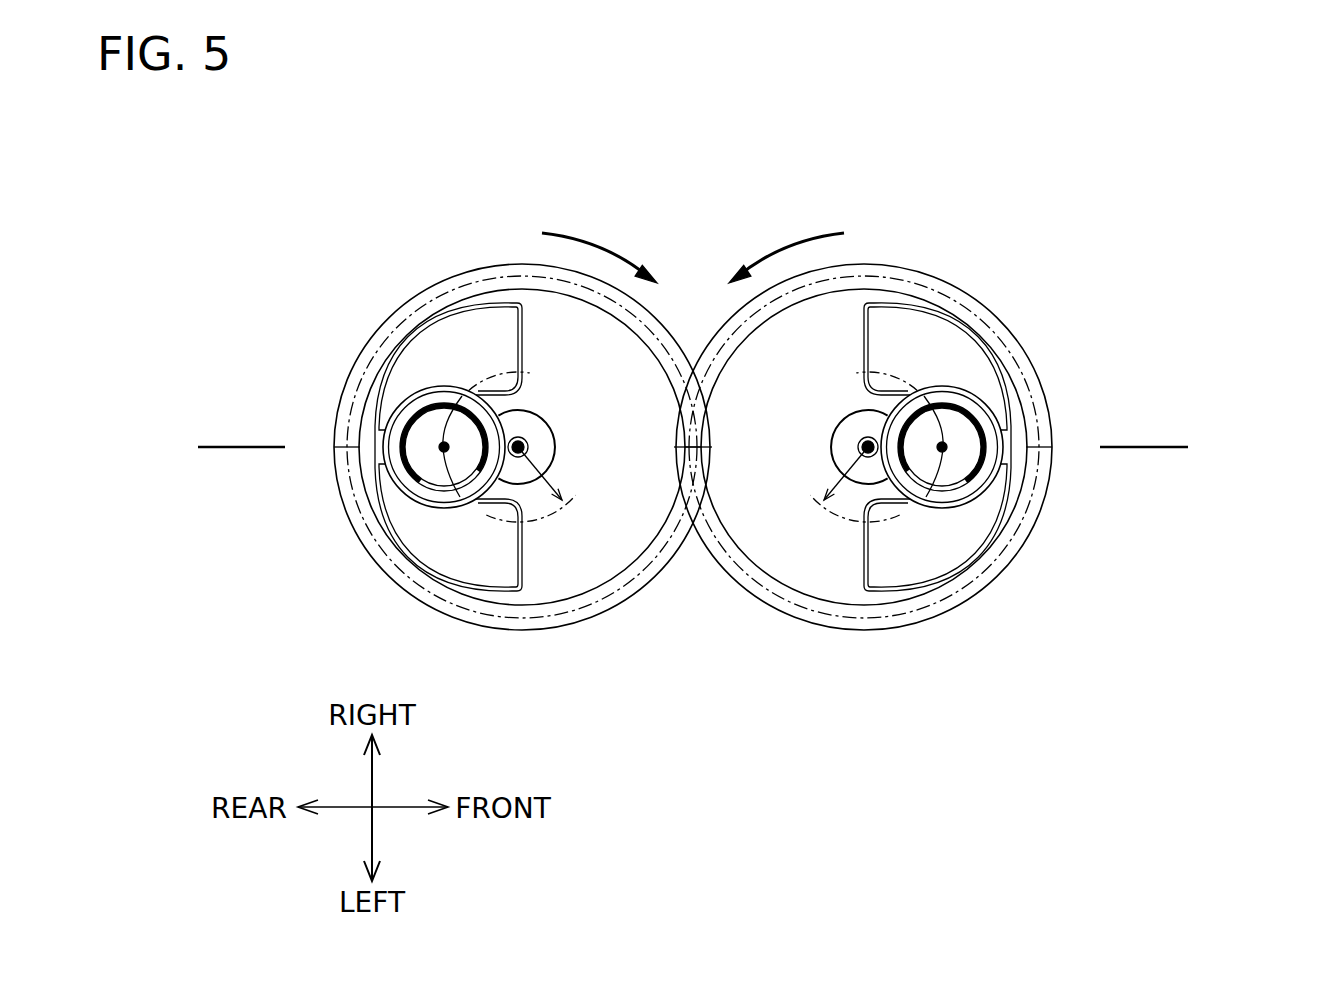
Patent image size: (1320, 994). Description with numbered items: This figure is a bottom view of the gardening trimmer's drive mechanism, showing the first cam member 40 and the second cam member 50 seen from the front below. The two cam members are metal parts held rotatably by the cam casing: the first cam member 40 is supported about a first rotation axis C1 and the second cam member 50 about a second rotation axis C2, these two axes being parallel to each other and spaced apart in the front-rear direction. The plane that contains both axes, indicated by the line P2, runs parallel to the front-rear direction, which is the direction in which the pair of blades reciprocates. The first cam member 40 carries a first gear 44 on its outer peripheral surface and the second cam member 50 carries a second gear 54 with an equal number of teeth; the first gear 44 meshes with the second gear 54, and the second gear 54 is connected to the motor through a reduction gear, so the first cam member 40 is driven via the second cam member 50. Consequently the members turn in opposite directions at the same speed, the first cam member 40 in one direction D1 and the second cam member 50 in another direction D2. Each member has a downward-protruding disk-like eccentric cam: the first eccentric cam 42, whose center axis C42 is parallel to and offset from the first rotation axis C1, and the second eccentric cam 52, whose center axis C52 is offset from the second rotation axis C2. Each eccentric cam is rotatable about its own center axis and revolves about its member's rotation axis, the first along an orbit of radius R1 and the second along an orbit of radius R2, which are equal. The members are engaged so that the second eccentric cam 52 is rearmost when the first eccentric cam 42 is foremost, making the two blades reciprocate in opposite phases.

The first cam member 40 is at (1003, 297).
The first eccentric cam 42 is at (981, 391).
The first gear 44 is at (1019, 341).
The second cam member 50 is at (383, 297).
The second eccentric cam 52 is at (405, 391).
The second gear 54 is at (367, 341).
The first rotation axis C1 is at (867, 443).
The second rotation axis C2 is at (519, 443).
The center axis of the first eccentric cam C42 is at (946, 448).
The center axis of the second eccentric cam C52 is at (440, 448).
The one direction D1 is at (786, 243).
The another direction D2 is at (599, 243).
The radius of orbit of the first eccentric cam R1 is at (823, 495).
The radius of orbit of the second eccentric cam R2 is at (563, 495).
The line indicating plane including the rotation axes P2 is at (692, 447).